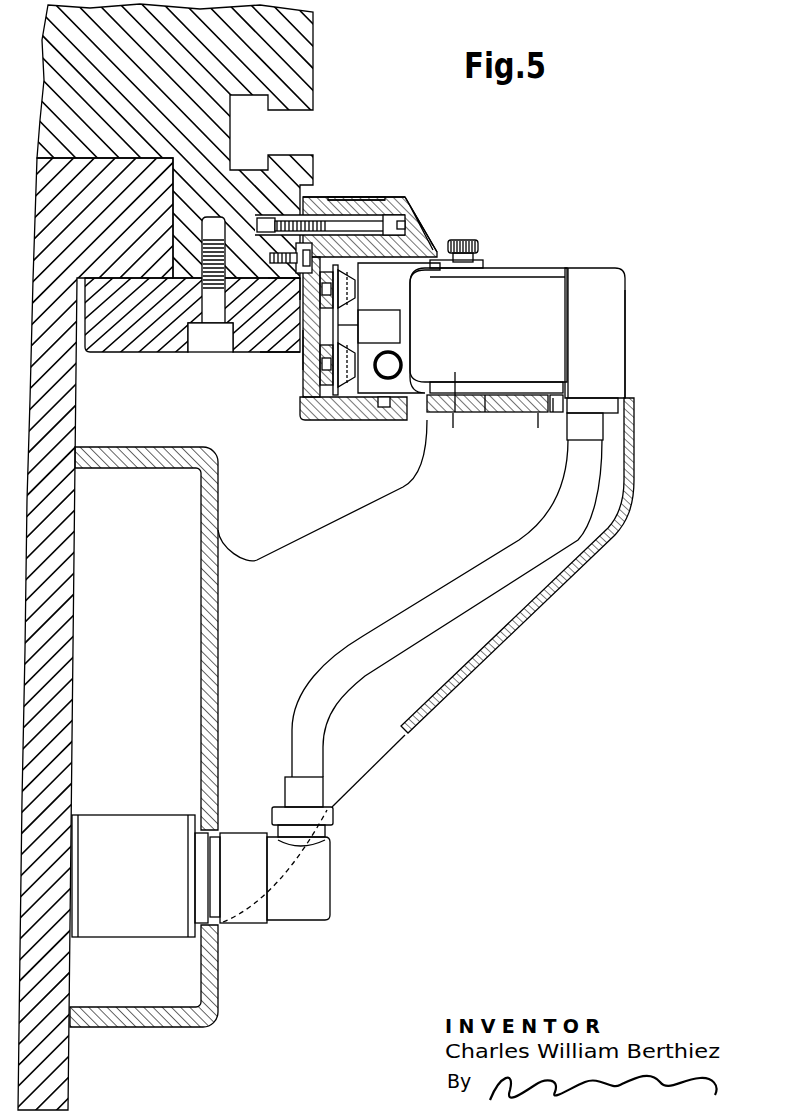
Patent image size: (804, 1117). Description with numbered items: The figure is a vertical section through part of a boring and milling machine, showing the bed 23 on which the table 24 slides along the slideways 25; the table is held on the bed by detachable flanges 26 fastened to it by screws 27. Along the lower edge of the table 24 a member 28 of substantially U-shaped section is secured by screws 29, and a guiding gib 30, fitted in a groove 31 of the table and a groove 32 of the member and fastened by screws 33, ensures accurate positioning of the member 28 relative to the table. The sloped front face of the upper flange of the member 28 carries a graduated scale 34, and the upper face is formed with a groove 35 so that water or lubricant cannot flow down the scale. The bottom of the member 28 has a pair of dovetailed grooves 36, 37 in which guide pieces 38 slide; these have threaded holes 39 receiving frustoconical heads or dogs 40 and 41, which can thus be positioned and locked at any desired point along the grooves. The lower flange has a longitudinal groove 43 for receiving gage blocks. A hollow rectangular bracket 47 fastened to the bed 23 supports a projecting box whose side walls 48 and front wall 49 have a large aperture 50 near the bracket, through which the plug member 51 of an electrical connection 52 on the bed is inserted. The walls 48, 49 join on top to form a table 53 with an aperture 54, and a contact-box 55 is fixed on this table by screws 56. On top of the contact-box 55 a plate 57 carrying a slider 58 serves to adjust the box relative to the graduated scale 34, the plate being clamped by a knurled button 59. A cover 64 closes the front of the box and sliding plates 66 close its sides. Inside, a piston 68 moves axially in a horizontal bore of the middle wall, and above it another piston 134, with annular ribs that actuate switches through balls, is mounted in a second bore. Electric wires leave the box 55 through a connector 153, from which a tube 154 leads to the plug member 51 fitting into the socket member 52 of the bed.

The bed 23 is at (60, 565).
The table 24 is at (300, 57).
The slideways 25 is at (135, 262).
The detachable flanges 26 is at (270, 343).
The screws 27 is at (202, 337).
The member of substantially U-shaped section 28 is at (352, 212).
The screws 29 is at (368, 201).
The guiding gib 30 is at (300, 280).
The groove 31 is at (295, 250).
The groove 32 is at (360, 223).
The screws 33 is at (275, 277).
The graduated scale 34 is at (412, 218).
The groove 35 is at (377, 197).
The dovetailed groove 36 is at (303, 350).
The dovetailed groove 37 is at (323, 387).
The guide pieces 38 is at (333, 323).
The threaded holes 39 is at (302, 390).
The frustoconical head or dog 40 is at (360, 268).
The frustoconical head or dog 41 is at (345, 387).
The longitudinal groove 43 is at (375, 422).
The hollow rectangular bracket 47 is at (218, 657).
The side walls 48 is at (297, 541).
The front wall 49 is at (497, 643).
The aperture 50 is at (362, 782).
The plug member 51 is at (315, 873).
The electrical connection 52 is at (138, 825).
The table 53 is at (520, 405).
The aperture 54 is at (557, 408).
The contact-box 55 is at (543, 272).
The screws 56 is at (538, 382).
The plate 57 is at (483, 265).
The slider 58 is at (433, 247).
The knurled button 59 is at (478, 243).
The cover 64 is at (610, 317).
The sliding plates 66 is at (545, 290).
The piston 68 is at (358, 343).
The piston 134 is at (358, 287).
The connector 153 is at (590, 427).
The tube 154 is at (567, 487).